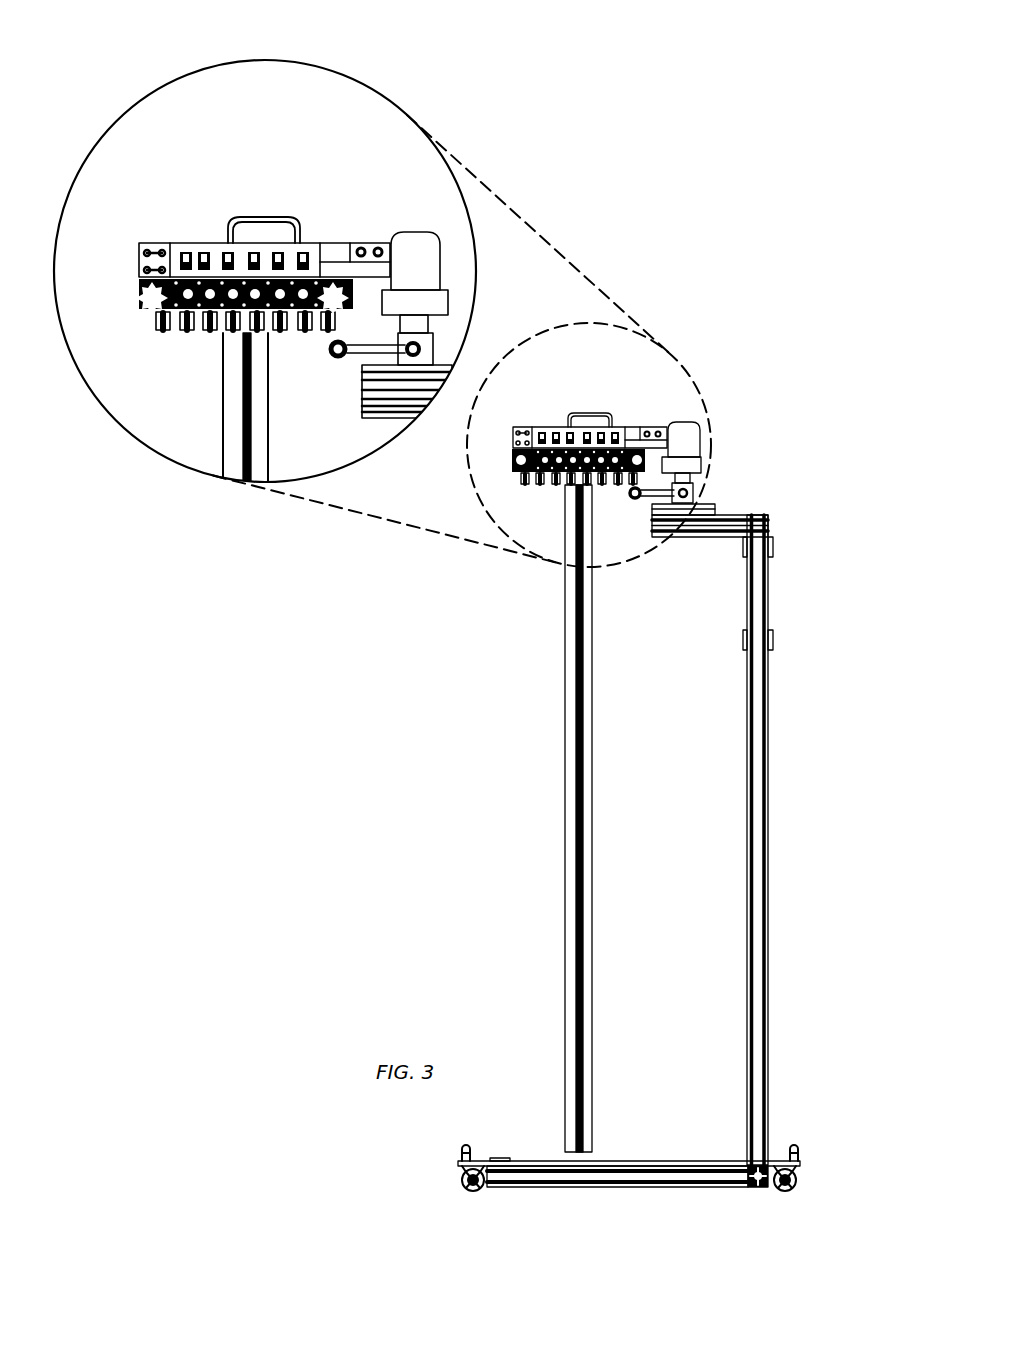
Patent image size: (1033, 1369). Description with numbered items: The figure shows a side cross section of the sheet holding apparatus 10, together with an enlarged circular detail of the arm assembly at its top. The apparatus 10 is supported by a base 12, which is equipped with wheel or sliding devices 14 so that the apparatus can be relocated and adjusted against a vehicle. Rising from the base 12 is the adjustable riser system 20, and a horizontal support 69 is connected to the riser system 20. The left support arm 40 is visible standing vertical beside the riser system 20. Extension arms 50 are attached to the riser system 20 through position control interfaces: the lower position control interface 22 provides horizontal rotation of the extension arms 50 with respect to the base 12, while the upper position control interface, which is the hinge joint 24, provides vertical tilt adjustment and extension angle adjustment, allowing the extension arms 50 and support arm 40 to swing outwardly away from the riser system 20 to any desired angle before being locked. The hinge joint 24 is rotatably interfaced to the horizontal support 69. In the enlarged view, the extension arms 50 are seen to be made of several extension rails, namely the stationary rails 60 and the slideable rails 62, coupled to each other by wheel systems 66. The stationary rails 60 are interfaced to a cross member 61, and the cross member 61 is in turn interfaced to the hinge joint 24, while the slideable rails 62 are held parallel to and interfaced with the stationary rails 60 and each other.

The sheet holding apparatus 10 is at (777, 447).
The base 12 is at (624, 1188).
The wheel or sliding devices 14 is at (475, 1191).
The adjustable riser system 20 is at (773, 681).
The lower position control interface 22 is at (428, 345).
The upper position control interface (hinge joint) 24 is at (428, 258).
The left support arm 40 is at (594, 680).
The extension arms 50 is at (545, 427).
The stationary rails 60 is at (150, 313).
The cross member 61 is at (267, 248).
The slideable rails 62 is at (245, 296).
The wheel systems 66 is at (158, 323).
The horizontal support 69 is at (698, 538).